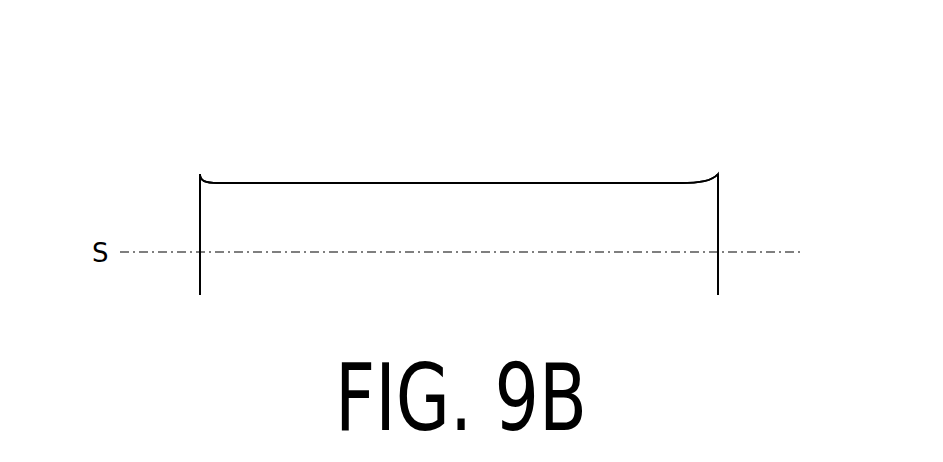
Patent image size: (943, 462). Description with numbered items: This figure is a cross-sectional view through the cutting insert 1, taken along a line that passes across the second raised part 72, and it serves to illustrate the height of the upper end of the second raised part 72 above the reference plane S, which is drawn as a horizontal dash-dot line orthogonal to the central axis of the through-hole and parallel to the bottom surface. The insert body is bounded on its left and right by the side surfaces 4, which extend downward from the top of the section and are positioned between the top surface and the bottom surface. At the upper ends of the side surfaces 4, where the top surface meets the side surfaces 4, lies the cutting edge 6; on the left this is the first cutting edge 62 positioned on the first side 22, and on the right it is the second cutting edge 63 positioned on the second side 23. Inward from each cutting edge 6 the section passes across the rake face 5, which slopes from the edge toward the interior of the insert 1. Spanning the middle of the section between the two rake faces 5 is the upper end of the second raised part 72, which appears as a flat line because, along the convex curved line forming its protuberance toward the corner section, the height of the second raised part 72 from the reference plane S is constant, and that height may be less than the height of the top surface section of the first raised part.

The cutting insert 1 is at (505, 128).
The side surfaces 4 is at (197, 220).
The rake face 5 is at (213, 182).
The cutting edge 6 is at (451, 130).
The first cutting edge 62 is at (200, 177).
The second cutting edge 63 is at (718, 178).
The first side 22 is at (190, 170).
The second side 23 is at (722, 178).
The second raised part 72 is at (387, 183).